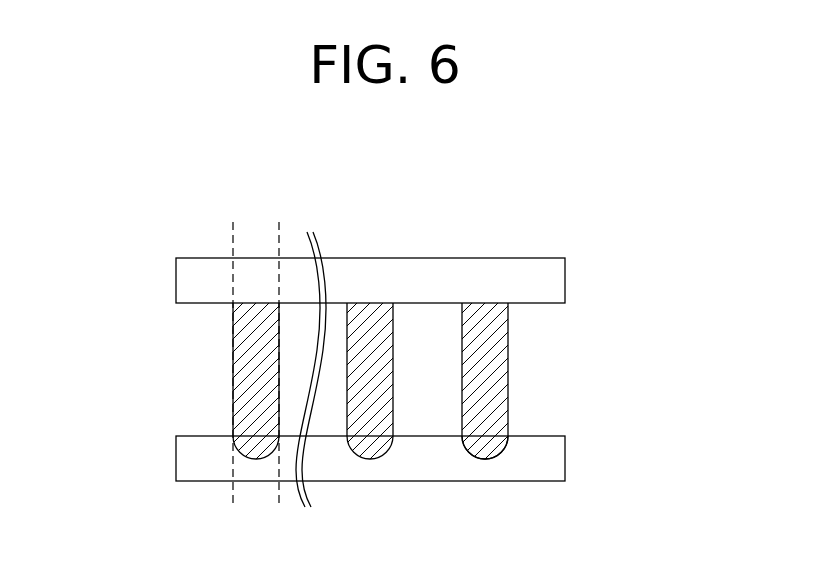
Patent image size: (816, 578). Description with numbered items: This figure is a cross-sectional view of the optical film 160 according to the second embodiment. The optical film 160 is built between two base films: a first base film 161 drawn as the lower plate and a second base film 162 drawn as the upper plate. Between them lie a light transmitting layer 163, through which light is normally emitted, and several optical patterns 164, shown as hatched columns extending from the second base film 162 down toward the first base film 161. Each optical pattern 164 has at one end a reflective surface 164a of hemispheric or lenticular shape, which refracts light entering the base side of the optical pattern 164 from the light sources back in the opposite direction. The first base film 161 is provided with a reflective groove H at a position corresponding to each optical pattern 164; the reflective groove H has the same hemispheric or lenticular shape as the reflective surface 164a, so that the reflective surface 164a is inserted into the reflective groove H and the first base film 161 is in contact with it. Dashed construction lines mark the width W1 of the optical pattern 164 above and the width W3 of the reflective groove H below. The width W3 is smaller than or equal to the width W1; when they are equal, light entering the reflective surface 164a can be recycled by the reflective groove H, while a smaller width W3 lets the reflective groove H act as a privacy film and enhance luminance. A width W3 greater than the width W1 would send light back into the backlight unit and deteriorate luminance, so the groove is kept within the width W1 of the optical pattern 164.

The optical film 160 is at (93, 201).
The first base film 161 is at (557, 459).
The second base film 162 is at (555, 280).
The light transmitting layer 163 is at (428, 333).
The optical pattern 164 is at (500, 355).
The reflective surface 164a is at (506, 452).
The reflective groove H is at (468, 457).
The width of the optical pattern W1 is at (233, 222).
The width of the reflective groove W3 is at (233, 501).